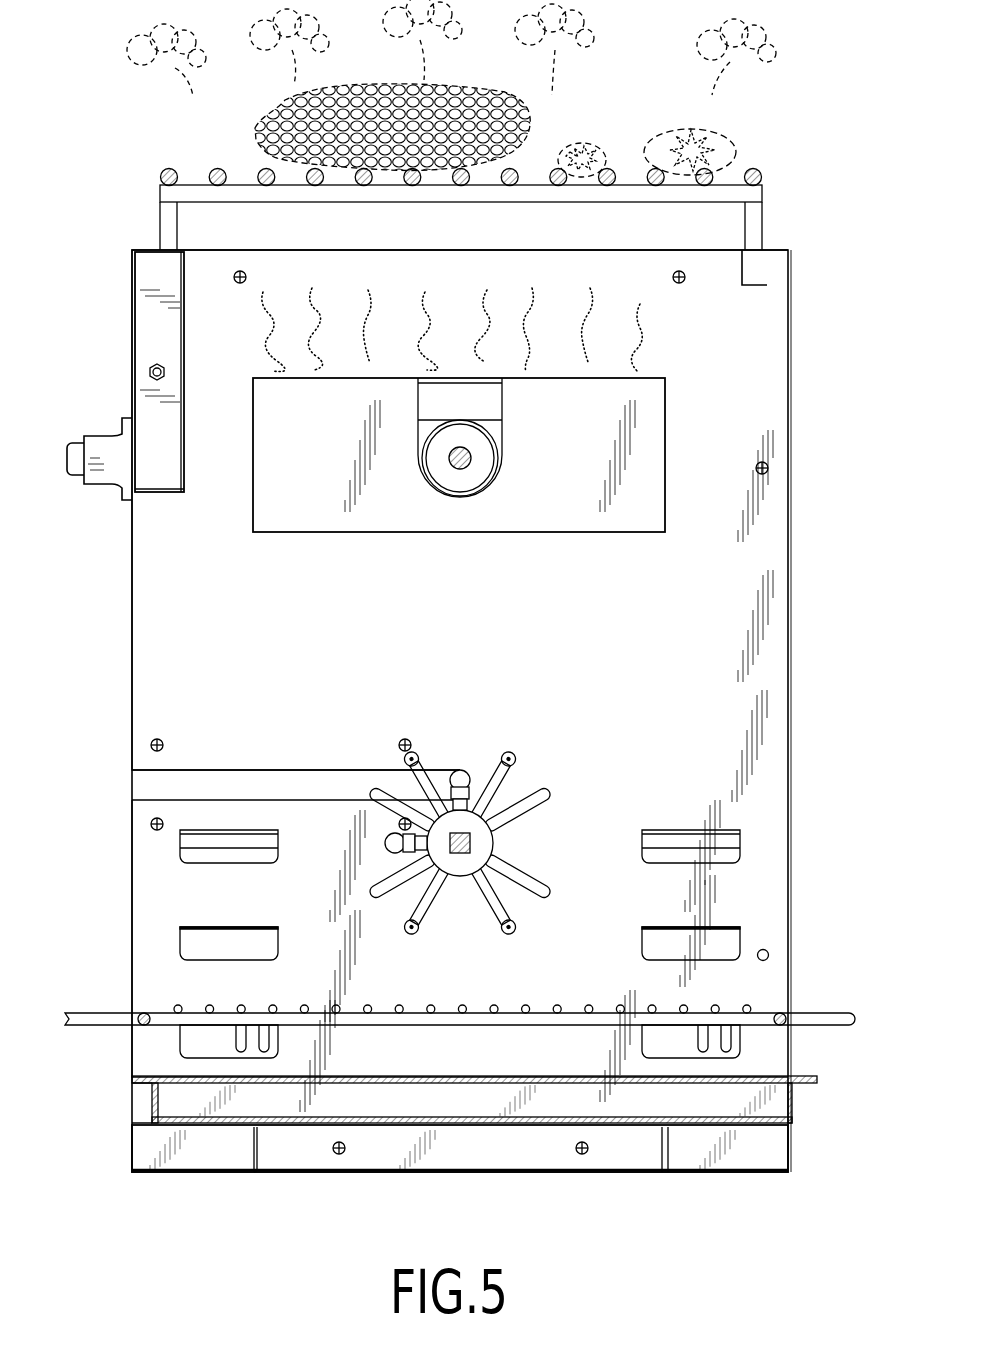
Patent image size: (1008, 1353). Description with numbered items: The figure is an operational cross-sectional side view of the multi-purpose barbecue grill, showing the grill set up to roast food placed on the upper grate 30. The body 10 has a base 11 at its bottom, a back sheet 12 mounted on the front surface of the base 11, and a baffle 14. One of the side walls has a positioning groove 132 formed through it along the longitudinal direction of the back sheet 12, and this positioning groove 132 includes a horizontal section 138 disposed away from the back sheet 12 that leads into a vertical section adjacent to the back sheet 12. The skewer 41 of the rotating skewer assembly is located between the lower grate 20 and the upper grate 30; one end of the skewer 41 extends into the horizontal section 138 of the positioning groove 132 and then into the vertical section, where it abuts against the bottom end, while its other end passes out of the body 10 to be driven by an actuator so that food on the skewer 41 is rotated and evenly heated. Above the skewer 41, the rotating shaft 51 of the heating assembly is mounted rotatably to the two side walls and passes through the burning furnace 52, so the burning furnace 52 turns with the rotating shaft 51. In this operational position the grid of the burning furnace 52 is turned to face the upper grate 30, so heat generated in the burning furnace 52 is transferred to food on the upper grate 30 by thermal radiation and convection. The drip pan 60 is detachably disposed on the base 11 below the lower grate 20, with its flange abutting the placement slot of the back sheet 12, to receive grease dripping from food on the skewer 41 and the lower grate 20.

The body 10 is at (700, 1195).
The base 11 is at (795, 1145).
The back sheet 12 is at (793, 592).
The baffle 14 is at (133, 292).
The lower grate 20 is at (112, 1012).
The upper grate 30 is at (158, 178).
The skewer 41 is at (537, 745).
The rotating shaft 51 is at (480, 470).
The burning furnace 52 is at (670, 405).
The drip pan 60 is at (150, 1092).
The positioning groove 132 is at (145, 784).
The horizontal section 138 is at (318, 783).